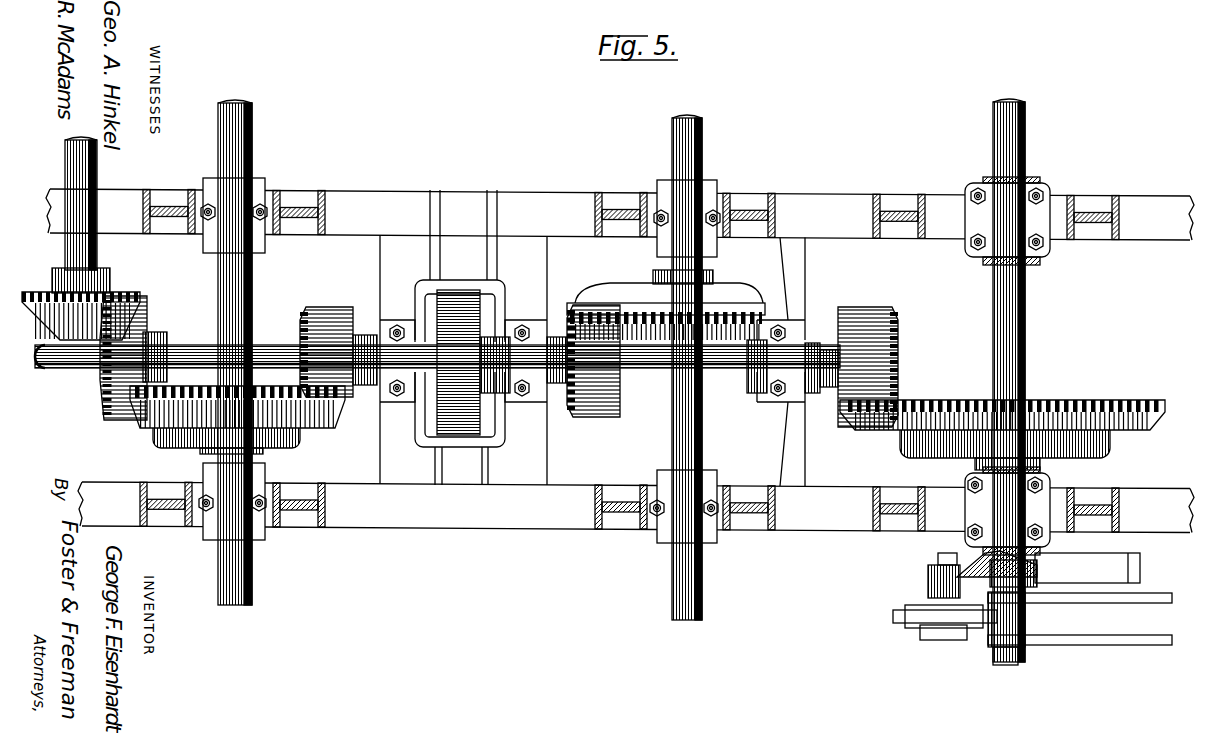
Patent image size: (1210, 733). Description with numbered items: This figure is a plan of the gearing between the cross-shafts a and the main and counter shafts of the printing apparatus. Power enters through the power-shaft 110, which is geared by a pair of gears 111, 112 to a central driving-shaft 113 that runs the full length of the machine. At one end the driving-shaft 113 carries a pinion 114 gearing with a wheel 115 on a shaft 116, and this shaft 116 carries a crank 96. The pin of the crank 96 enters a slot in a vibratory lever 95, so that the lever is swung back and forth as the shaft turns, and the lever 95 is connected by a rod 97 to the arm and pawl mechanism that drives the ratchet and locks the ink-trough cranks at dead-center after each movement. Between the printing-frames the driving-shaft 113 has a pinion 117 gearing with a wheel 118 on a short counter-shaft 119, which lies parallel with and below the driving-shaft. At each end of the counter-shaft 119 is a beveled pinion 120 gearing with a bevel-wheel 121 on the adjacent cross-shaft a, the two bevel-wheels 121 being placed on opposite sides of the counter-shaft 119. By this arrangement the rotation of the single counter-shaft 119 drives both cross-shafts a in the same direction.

The power-shaft 110 is at (66, 255).
The gear 111 is at (128, 286).
The gear 112 is at (112, 400).
The central driving-shaft 113 is at (195, 345).
The pinion 114 is at (907, 342).
The wheel 115 is at (1120, 402).
The shaft 116 is at (1026, 336).
The pinion 117 is at (478, 410).
The wheel 118 is at (481, 290).
The counter-shaft 119 is at (366, 390).
The beveled pinion 120 is at (332, 312).
The bevel-wheel 121 is at (150, 428).
The vibratory lever 95 is at (905, 628).
The crank 96 is at (1039, 569).
The rod 97 is at (1110, 603).
The cross-shaft a is at (220, 270).